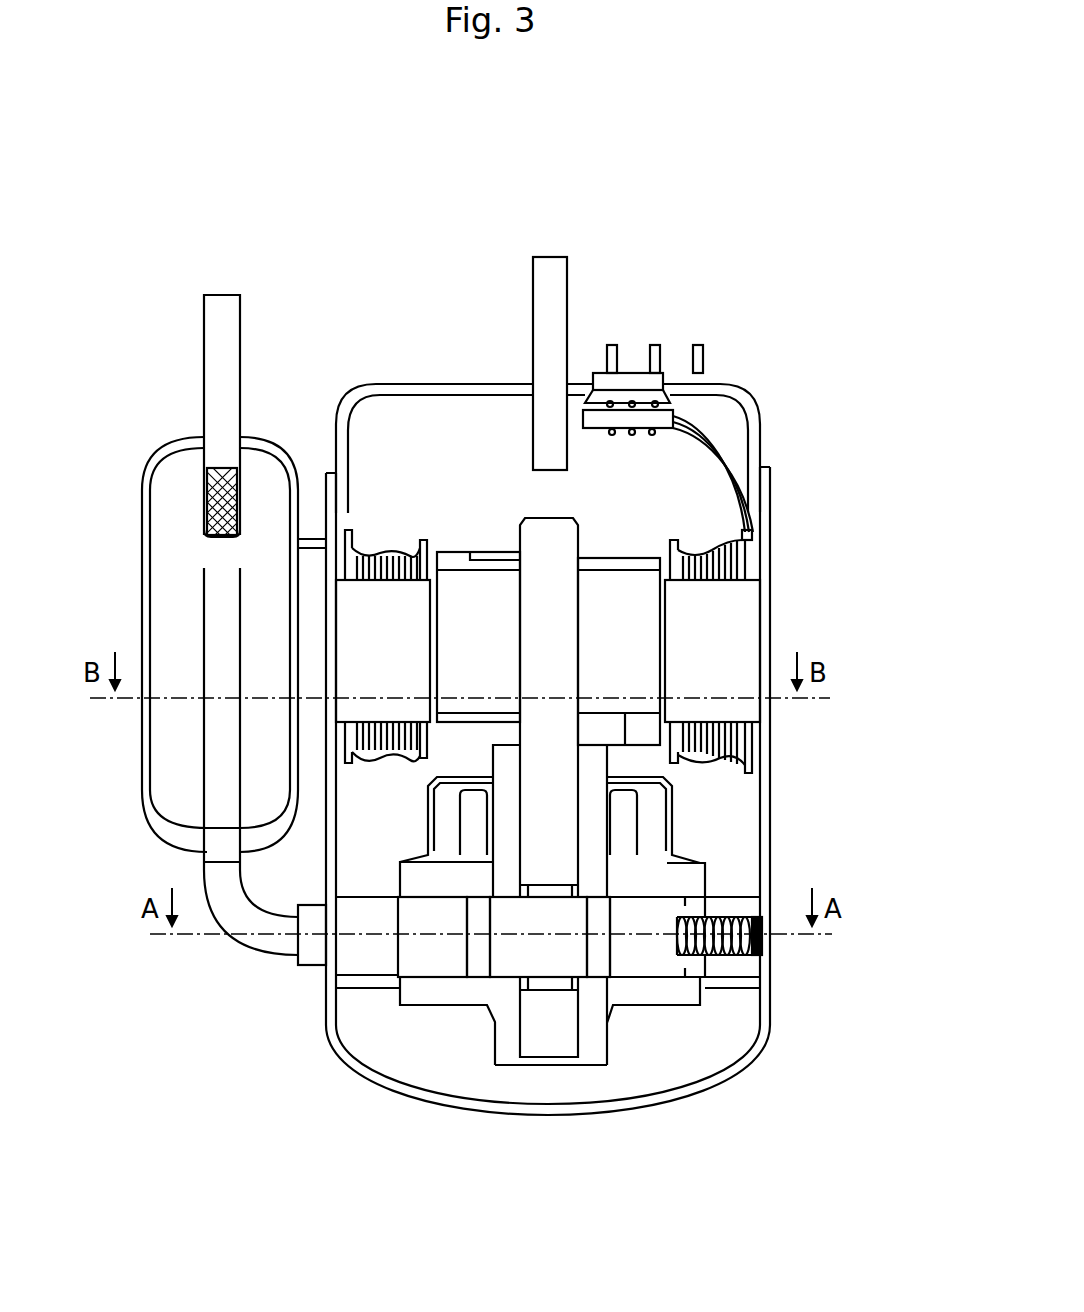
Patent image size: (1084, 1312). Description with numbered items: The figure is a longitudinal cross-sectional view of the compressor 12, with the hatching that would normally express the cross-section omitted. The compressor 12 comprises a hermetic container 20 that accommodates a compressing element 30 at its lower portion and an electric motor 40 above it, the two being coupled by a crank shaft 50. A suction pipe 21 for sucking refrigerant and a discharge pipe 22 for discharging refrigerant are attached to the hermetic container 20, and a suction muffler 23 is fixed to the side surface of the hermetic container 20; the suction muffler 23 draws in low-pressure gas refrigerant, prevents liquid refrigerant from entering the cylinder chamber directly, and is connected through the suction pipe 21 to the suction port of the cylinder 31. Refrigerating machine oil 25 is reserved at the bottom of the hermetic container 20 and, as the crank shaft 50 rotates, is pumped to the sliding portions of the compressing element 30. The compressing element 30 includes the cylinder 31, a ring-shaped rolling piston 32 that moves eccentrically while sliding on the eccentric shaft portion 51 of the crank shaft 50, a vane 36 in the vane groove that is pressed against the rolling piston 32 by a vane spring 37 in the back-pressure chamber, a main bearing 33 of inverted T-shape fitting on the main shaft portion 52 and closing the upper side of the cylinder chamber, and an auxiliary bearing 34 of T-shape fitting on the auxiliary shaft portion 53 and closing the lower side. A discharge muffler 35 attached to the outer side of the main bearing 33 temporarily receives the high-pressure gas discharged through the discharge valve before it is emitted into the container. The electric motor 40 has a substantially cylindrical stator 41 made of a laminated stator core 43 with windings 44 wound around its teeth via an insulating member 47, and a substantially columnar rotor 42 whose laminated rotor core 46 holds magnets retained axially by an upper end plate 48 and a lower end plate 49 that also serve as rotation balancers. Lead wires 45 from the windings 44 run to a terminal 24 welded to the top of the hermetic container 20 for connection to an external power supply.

The compressor 12 is at (728, 286).
The hermetic container 20 is at (393, 1090).
The suction pipe 21 is at (255, 953).
The discharge pipe 22 is at (567, 283).
The suction muffler 23 is at (145, 770).
The terminal 24 is at (663, 380).
The refrigerating machine oil 25 is at (355, 1033).
The compressing element 30 is at (868, 745).
The cylinder 31 is at (698, 900).
The rolling piston 32 is at (660, 960).
The main bearing 33 is at (600, 840).
The auxiliary bearing 34 is at (597, 1012).
The discharge muffler 35 is at (665, 780).
The vane 36 is at (600, 968).
The vane spring 37 is at (762, 953).
The electric motor 40 is at (838, 535).
The stator 41 is at (760, 705).
The rotor 42 is at (663, 680).
The stator core 43 is at (752, 610).
The windings 44 is at (735, 572).
The lead wires 45 is at (722, 447).
The rotor core 46 is at (455, 583).
The insulating member 47 is at (745, 540).
The upper end plate 48 is at (458, 548).
The lower end plate 49 is at (477, 723).
The crank shaft 50 is at (565, 1060).
The eccentric shaft portion 51 is at (510, 963).
The main shaft portion 52 is at (538, 545).
The auxiliary shaft portion 53 is at (538, 1045).